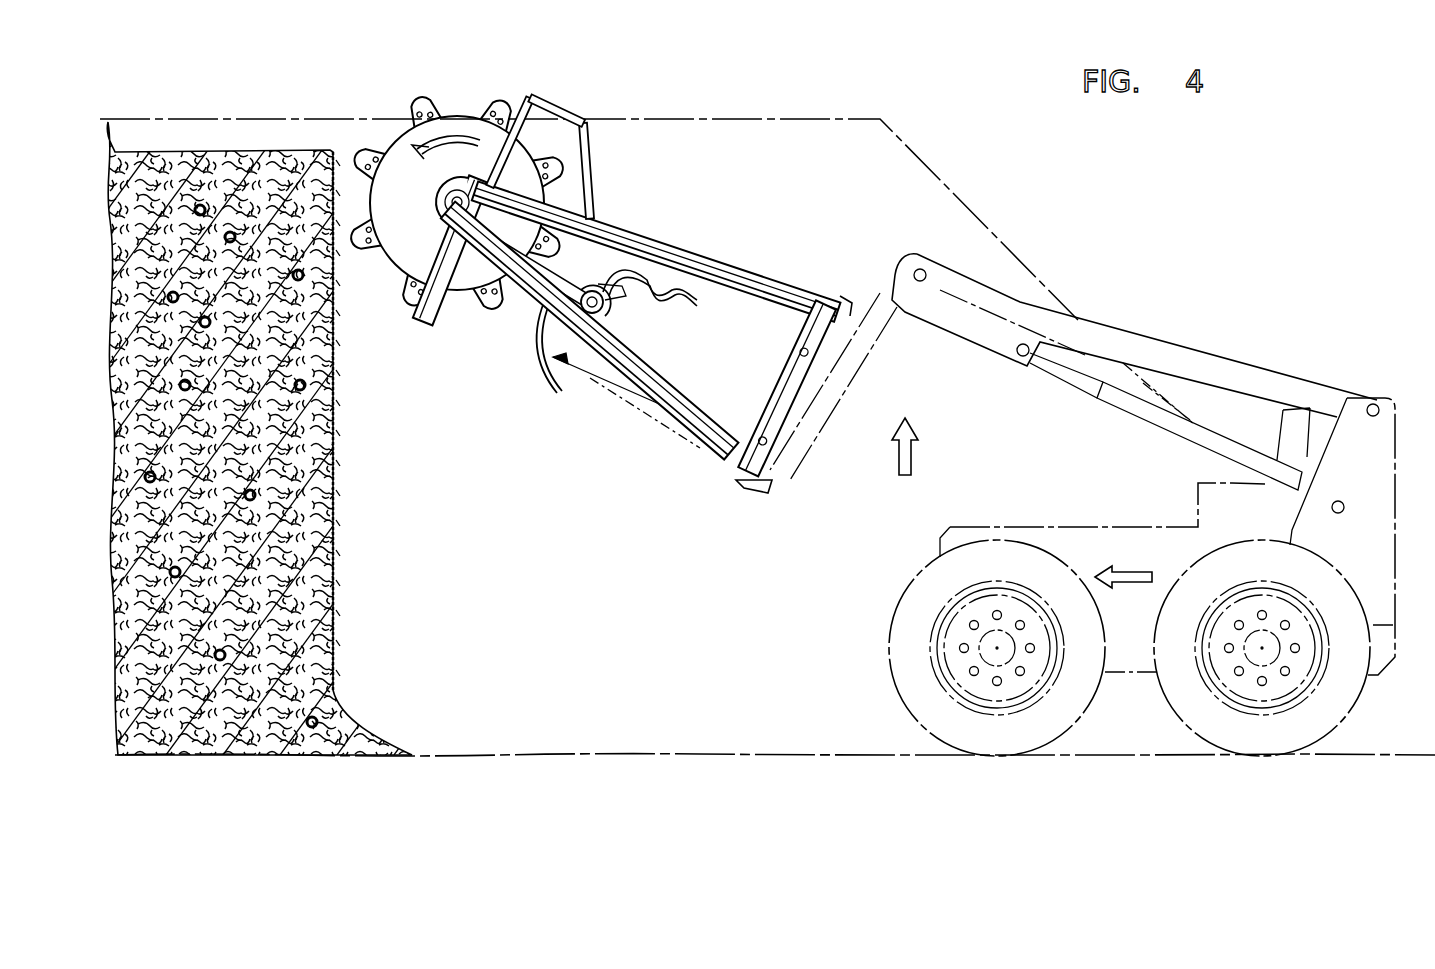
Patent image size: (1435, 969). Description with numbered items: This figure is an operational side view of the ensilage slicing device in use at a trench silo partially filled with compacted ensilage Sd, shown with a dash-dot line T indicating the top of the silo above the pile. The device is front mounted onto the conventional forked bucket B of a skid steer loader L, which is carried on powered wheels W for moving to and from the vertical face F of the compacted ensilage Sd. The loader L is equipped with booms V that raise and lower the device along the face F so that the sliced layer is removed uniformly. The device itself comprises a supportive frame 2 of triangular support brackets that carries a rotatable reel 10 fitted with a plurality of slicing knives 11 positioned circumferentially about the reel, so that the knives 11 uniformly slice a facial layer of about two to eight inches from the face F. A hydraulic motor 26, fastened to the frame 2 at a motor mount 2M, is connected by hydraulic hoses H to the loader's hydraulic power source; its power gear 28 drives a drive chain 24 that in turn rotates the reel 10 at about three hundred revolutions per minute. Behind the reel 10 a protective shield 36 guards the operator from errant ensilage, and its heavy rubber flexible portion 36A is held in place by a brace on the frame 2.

The rotatable reel 10 is at (462, 105).
The slicing knives 11 is at (430, 100).
The protective shield 36 is at (596, 176).
The drive chain 24 is at (583, 209).
The supportive frame 2 is at (768, 286).
The power gear 28 is at (608, 308).
The hydraulic hoses H is at (694, 302).
The hydraulic motor 26 is at (603, 312).
The flexible portion of shield 36A is at (541, 360).
The motor mount 2M is at (574, 325).
The forked bucket B is at (657, 436).
The vertical face F is at (333, 383).
The compacted ensilage Sd is at (333, 461).
The ground surface line T is at (928, 150).
The booms V is at (1128, 332).
The skid steer loader L is at (1063, 510).
The powered wheels W is at (900, 602).